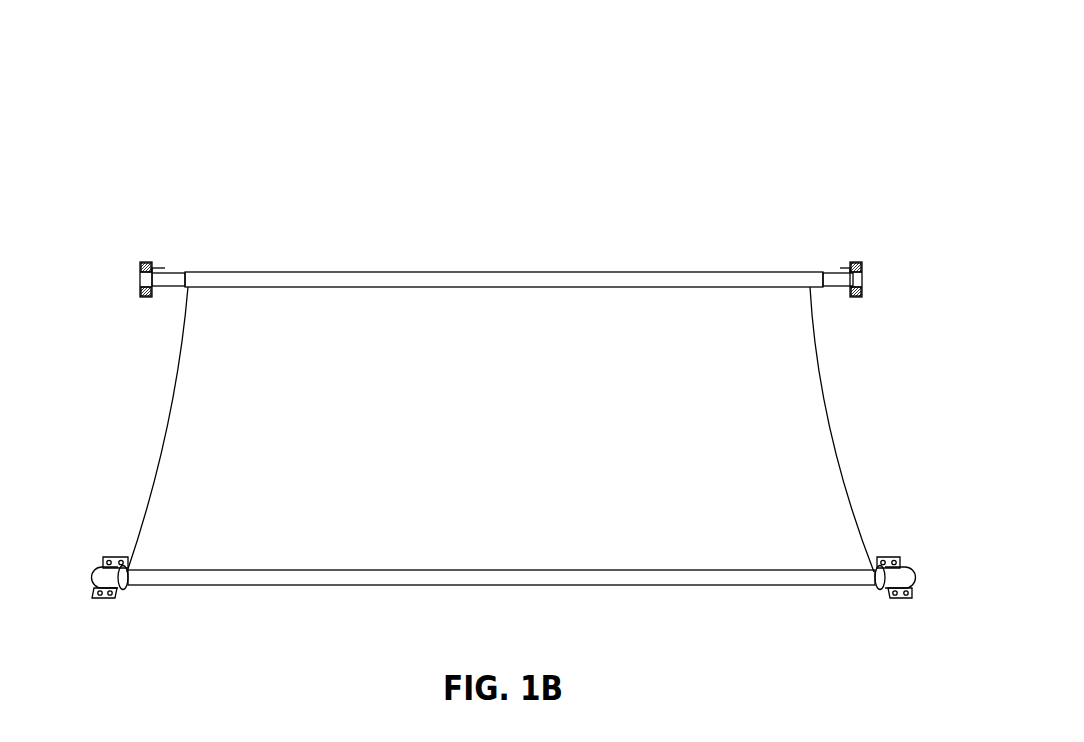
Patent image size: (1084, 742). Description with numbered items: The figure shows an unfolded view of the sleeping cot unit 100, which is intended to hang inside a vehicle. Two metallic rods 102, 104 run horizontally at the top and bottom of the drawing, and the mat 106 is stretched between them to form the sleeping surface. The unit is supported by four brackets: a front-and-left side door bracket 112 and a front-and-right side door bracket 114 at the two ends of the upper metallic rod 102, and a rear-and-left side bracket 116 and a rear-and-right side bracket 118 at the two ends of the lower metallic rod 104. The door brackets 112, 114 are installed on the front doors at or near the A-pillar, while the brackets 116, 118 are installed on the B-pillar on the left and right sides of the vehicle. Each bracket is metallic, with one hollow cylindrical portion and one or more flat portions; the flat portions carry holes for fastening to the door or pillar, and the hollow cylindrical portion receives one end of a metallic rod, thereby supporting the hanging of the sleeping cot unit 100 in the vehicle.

The sleeping cot unit 100 is at (723, 121).
The metallic rod 102 is at (174, 279).
The metallic rod 104 is at (128, 587).
The mat 106 is at (806, 445).
The front-and-left side door bracket 112 is at (138, 278).
The front-and-right side door bracket 114 is at (860, 279).
The rear-and-left side bracket 116 is at (107, 574).
The rear-and-right side bracket 118 is at (893, 578).